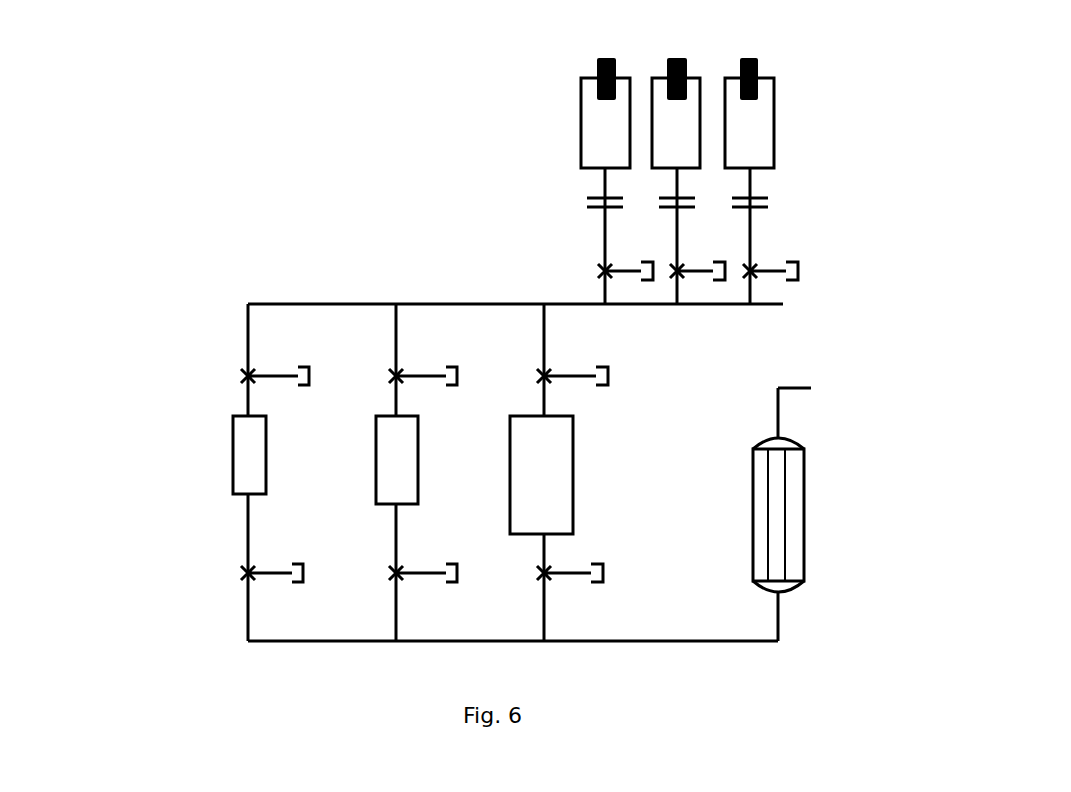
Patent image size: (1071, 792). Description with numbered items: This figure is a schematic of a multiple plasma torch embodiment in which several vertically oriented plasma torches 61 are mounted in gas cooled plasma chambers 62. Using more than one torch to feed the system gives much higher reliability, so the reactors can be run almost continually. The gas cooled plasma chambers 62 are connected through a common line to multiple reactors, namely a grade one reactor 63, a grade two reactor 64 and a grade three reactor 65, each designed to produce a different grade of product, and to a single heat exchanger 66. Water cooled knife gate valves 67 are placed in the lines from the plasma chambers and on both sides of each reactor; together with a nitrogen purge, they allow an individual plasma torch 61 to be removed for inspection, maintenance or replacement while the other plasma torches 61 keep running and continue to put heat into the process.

The plasma torch 61 is at (729, 64).
The gas cooled plasma chamber 62 is at (718, 72).
The grade 1 reactor 63 is at (206, 488).
The grade 2 reactor 64 is at (360, 391).
The grade 3 reactor 65 is at (645, 437).
The heat exchanger 66 is at (821, 541).
The water cooled knife gate valve 67 is at (820, 348).